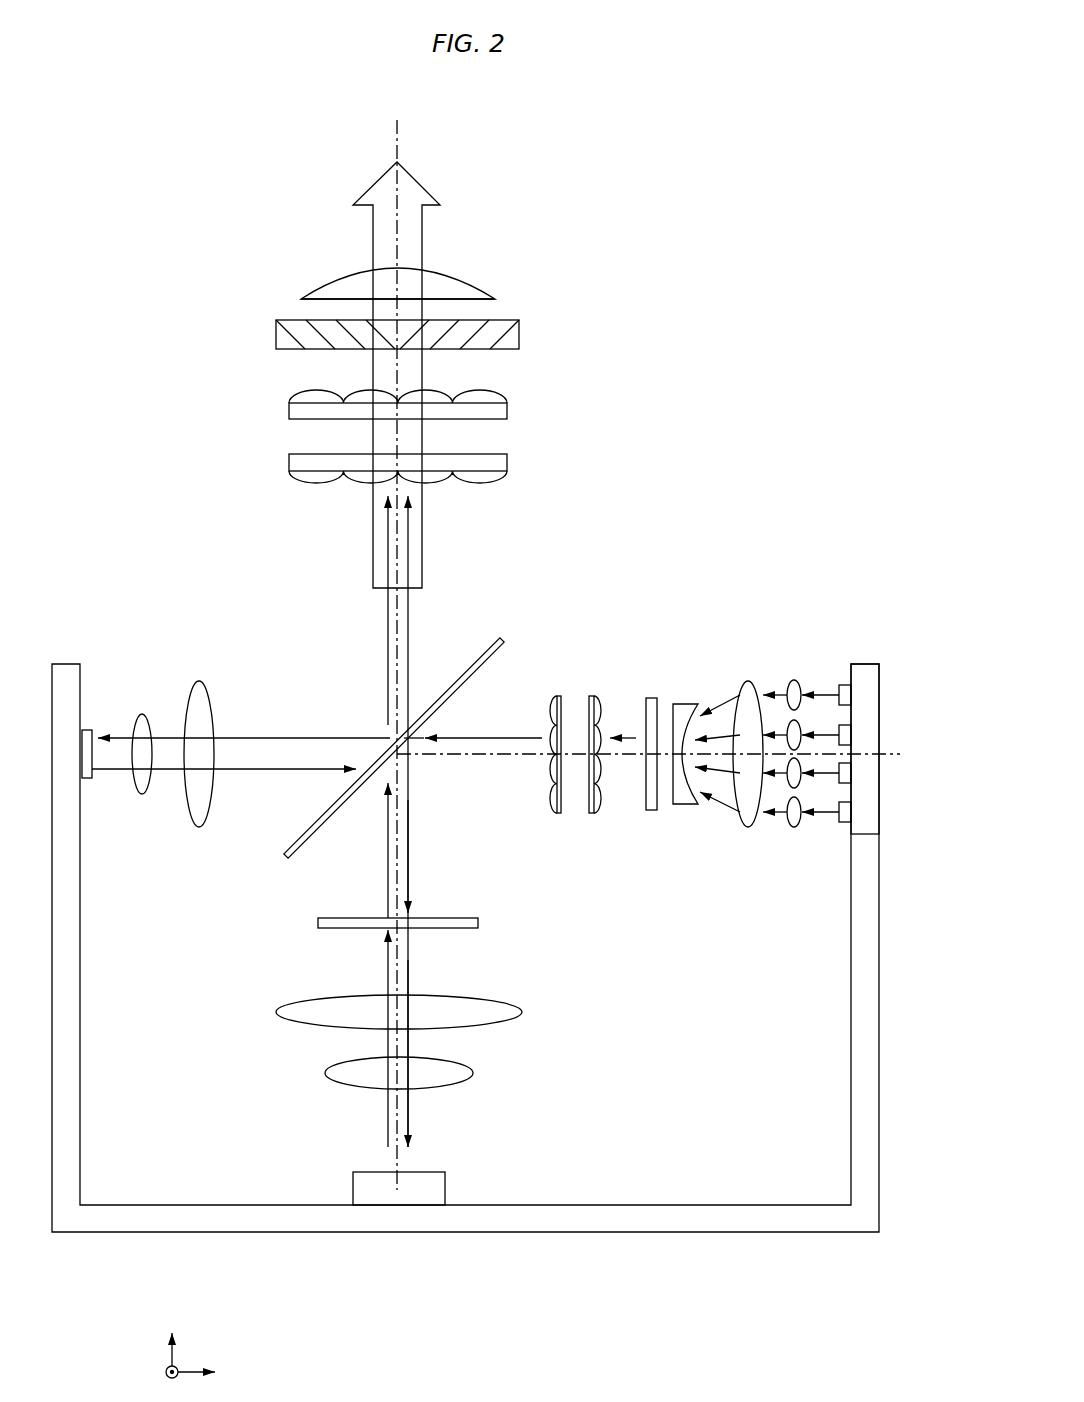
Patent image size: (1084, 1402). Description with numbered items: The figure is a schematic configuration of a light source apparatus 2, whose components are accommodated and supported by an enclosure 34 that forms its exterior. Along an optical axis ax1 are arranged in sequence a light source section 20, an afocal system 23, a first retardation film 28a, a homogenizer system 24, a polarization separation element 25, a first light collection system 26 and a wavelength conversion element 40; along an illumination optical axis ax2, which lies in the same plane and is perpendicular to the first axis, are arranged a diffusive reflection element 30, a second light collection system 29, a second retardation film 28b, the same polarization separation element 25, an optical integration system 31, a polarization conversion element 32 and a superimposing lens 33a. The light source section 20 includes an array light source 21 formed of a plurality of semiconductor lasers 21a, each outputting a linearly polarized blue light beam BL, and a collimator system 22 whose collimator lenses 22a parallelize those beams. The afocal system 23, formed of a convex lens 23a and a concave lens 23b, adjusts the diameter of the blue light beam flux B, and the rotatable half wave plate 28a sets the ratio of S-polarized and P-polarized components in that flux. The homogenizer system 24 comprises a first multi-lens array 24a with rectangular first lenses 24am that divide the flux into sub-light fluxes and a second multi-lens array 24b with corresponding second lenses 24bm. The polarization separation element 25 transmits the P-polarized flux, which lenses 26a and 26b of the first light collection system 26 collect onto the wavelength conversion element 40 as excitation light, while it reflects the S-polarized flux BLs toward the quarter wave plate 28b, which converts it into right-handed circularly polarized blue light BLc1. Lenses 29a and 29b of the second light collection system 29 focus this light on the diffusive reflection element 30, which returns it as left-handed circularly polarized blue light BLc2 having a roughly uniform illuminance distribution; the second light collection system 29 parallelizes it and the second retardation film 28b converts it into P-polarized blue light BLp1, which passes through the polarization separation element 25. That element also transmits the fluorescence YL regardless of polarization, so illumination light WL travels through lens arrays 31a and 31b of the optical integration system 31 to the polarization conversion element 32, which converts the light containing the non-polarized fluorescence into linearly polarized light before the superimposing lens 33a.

The light source apparatus 2 is at (800, 232).
The light source section 20 is at (848, 578).
The array light source 21 is at (845, 663).
The semiconductor lasers 21a is at (851, 697).
The collimator system 22 is at (797, 658).
The collimator lenses 22a is at (792, 678).
The afocal system 23 is at (763, 599).
The convex lens 23a is at (745, 680).
The concave lens 23b is at (683, 702).
The homogenizer system 24 is at (623, 599).
The first multi-lens array 24a is at (597, 696).
The second multi-lens array 24b is at (552, 696).
The first lenses 24am is at (598, 812).
The second lenses 24bm is at (553, 815).
The polarization separation element 25 is at (468, 672).
The first light collection system 26 is at (207, 581).
The lens 26a is at (137, 718).
The lens 26b is at (192, 686).
The first retardation film 28a is at (650, 697).
The second retardation film 28b is at (318, 923).
The second light collection system 29 is at (607, 982).
The lens 29a is at (509, 1000).
The lens 29b is at (470, 1062).
The diffusive reflection element 30 is at (333, 1192).
The optical integration system 31 is at (594, 393).
The lens array 31a is at (509, 462).
The lens array 31b is at (509, 410).
The polarization conversion element 32 is at (521, 335).
The superimposing lens 33a is at (497, 279).
The enclosure 34 is at (880, 1075).
The wavelength conversion element 40 is at (88, 728).
The illumination light WL is at (372, 243).
The fluorescence YL is at (388, 635).
The blue light beam BL is at (826, 693).
The blue light beam flux B is at (519, 736).
The light beam flux of S-polarized component BLs is at (410, 892).
The P-polarized blue light BLp1 is at (410, 615).
The blue light BLc1 is at (410, 966).
The blue light BLc2 is at (388, 966).
The optical axis ax1 is at (893, 757).
The illumination optical axis ax2 is at (399, 127).